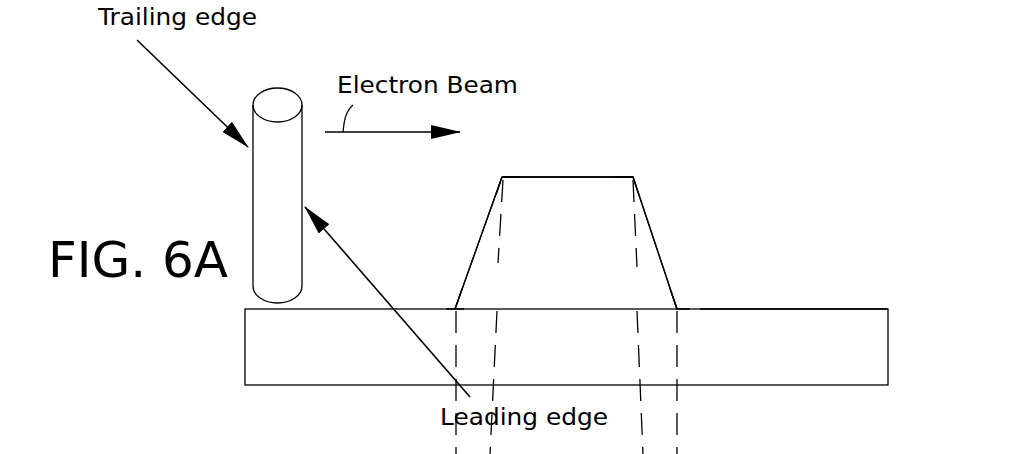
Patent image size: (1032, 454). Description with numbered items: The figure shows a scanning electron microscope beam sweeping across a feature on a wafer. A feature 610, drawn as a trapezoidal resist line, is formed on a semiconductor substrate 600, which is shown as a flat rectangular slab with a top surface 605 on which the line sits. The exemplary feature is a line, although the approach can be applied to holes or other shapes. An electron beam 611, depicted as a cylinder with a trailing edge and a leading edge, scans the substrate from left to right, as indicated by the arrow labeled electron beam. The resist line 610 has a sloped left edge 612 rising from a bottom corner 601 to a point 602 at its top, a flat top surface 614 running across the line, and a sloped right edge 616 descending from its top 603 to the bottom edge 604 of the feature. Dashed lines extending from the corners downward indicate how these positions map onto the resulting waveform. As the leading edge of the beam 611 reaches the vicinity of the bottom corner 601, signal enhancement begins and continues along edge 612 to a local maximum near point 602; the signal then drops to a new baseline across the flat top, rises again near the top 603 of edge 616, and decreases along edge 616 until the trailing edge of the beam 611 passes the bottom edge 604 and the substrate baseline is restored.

The substrate 600 is at (800, 360).
The bottom corner 601 is at (457, 303).
The point at top of edge 602 is at (503, 175).
The top of edge 603 is at (634, 176).
The bottom edge of the feature 604 is at (678, 306).
The substrate top surface 605 is at (855, 306).
The feature (resist line) 610 is at (587, 247).
The electron beam 611 is at (302, 177).
The edge 612 is at (486, 222).
The top surface of resist line 614 is at (595, 176).
The edge 616 is at (653, 237).